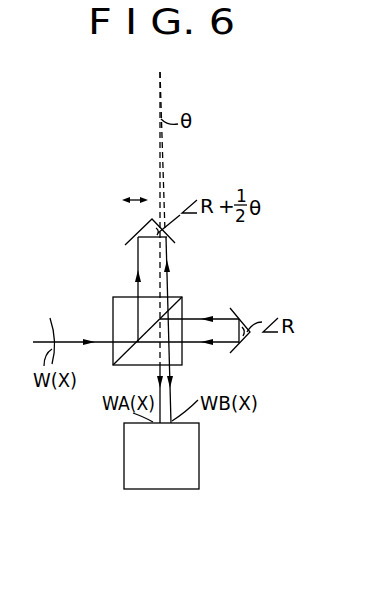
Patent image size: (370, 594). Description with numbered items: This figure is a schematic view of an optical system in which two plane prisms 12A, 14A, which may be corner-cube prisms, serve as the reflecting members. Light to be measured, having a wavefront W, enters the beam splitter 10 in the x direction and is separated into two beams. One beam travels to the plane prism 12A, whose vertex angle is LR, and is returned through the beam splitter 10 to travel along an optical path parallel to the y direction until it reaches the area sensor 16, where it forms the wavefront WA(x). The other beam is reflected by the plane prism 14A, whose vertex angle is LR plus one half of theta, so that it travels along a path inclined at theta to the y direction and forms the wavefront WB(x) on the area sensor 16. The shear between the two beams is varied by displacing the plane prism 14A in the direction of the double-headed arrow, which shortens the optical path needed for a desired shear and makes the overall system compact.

The beam splitter 10 is at (120, 315).
The plane prism 12A is at (238, 315).
The plane prism 14A is at (128, 241).
The area sensor 16 is at (175, 483).